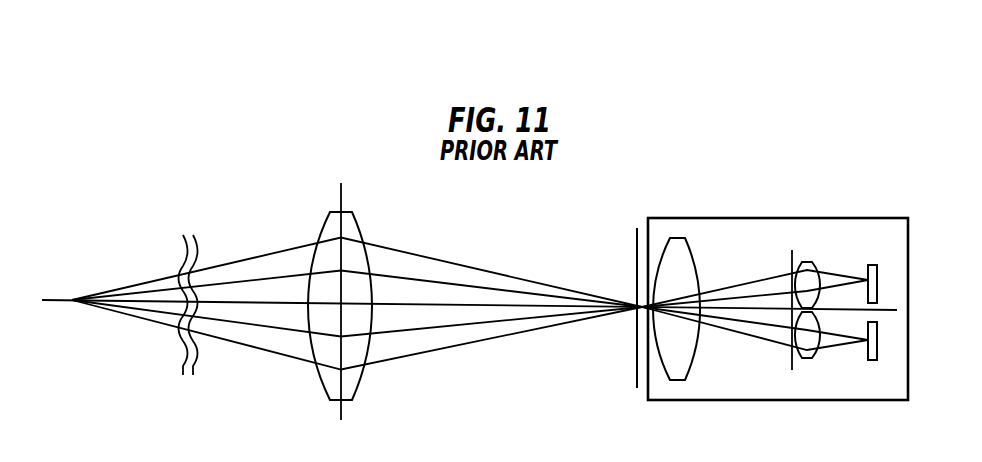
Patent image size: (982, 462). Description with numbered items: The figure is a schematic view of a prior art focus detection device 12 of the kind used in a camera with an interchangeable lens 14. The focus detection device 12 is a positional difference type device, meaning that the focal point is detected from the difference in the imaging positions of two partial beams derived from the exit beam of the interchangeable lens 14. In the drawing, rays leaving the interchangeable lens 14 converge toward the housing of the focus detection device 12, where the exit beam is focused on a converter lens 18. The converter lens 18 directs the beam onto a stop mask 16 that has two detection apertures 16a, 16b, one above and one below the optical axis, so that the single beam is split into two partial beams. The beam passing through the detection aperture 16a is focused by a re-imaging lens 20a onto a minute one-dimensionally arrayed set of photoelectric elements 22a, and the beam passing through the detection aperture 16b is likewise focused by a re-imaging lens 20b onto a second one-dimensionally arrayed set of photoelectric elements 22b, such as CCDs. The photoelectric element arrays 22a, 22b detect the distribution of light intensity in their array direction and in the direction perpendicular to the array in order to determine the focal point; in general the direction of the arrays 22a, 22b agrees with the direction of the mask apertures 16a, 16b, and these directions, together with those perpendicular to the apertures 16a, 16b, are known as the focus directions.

The focus detection device 12 is at (673, 215).
The interchangeable lens 14 is at (346, 233).
The stop mask 16 is at (792, 250).
The detection aperture 16a is at (788, 285).
The detection aperture 16b is at (788, 337).
The converter lens 18 is at (683, 270).
The re-imaging lens 20a is at (813, 263).
The re-imaging lens 20b is at (812, 360).
The one-dimensionally arrayed photoelectric elements 22a is at (878, 268).
The one-dimensionally arrayed photoelectric elements 22b is at (875, 356).